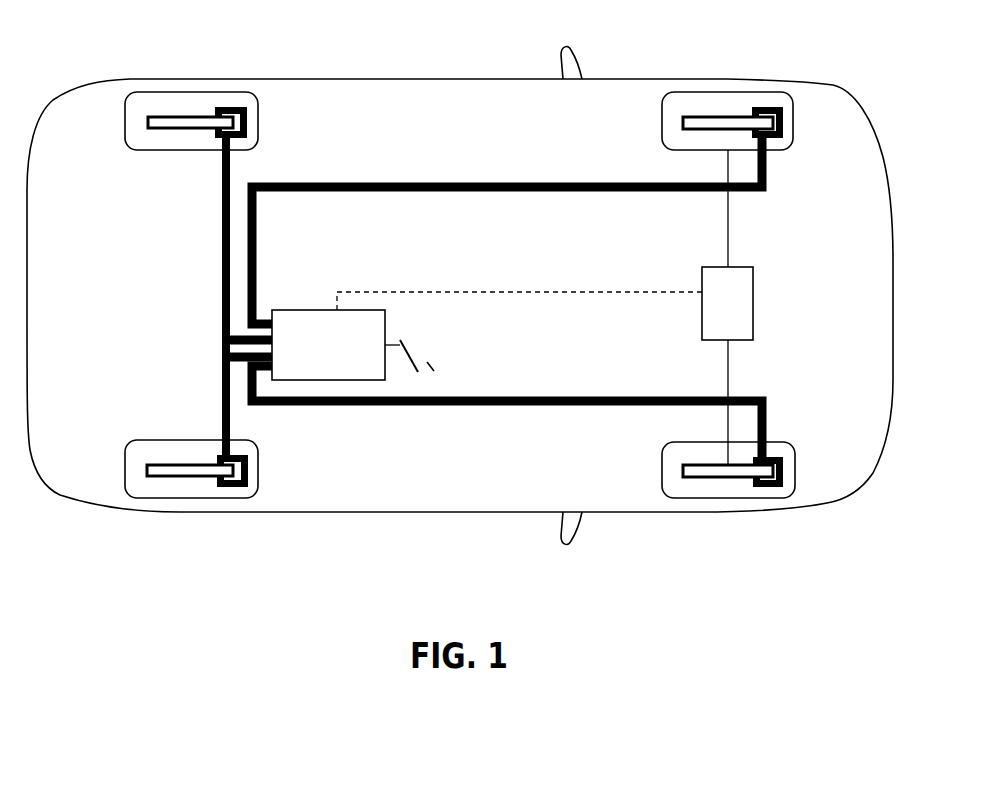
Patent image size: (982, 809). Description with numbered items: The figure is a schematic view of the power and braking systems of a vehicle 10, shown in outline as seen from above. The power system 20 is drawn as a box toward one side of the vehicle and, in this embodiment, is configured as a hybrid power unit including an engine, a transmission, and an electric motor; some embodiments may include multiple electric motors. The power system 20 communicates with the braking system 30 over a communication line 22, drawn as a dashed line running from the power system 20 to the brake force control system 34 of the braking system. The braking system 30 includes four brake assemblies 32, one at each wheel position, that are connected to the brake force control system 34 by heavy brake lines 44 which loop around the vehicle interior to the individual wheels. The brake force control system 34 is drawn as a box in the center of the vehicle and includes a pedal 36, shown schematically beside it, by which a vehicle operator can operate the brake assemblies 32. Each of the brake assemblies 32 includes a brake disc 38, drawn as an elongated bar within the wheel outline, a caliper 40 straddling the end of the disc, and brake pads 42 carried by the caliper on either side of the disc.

The vehicle 10 is at (692, 562).
The power system 20 is at (754, 300).
The communication line 22 is at (516, 289).
The braking system 30 is at (468, 122).
The brake assembly 32 is at (126, 94).
The brake force control system 34 is at (319, 351).
The pedal 36 is at (433, 367).
The brake disc 38 is at (155, 128).
The caliper 40 is at (246, 119).
The brake pads 42 is at (220, 116).
The brake lines 44 is at (408, 183).